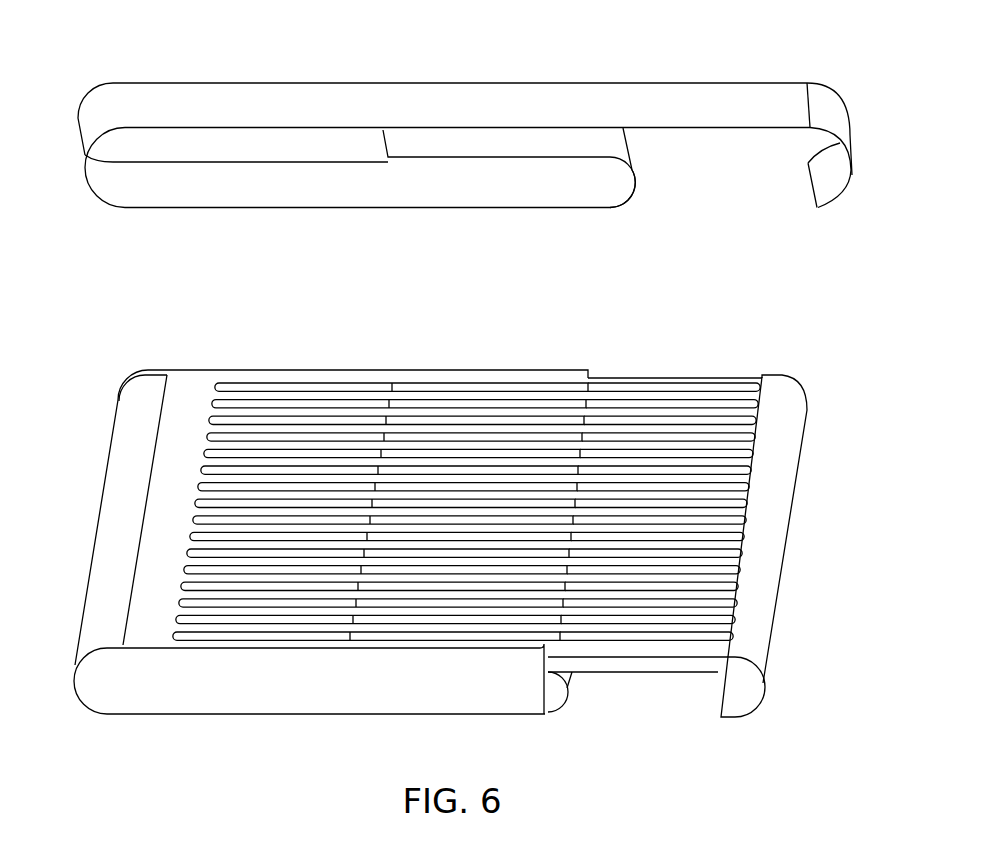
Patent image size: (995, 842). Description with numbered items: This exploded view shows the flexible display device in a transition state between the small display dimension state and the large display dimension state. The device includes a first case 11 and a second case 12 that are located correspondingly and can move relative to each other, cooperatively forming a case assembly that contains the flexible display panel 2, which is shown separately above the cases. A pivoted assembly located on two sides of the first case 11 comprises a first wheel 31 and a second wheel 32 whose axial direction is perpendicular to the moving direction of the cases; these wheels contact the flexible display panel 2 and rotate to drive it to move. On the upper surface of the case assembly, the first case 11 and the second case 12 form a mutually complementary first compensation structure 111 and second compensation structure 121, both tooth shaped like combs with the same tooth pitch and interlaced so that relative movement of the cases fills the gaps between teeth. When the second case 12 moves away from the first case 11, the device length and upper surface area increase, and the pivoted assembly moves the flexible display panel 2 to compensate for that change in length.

The flexible display panel 2 is at (670, 55).
The first case 11 is at (93, 687).
The second case 12 is at (778, 523).
The first wheel 31 is at (118, 510).
The second wheel 32 is at (553, 695).
The first compensation structure 111 is at (330, 373).
The second compensation structure 121 is at (648, 388).